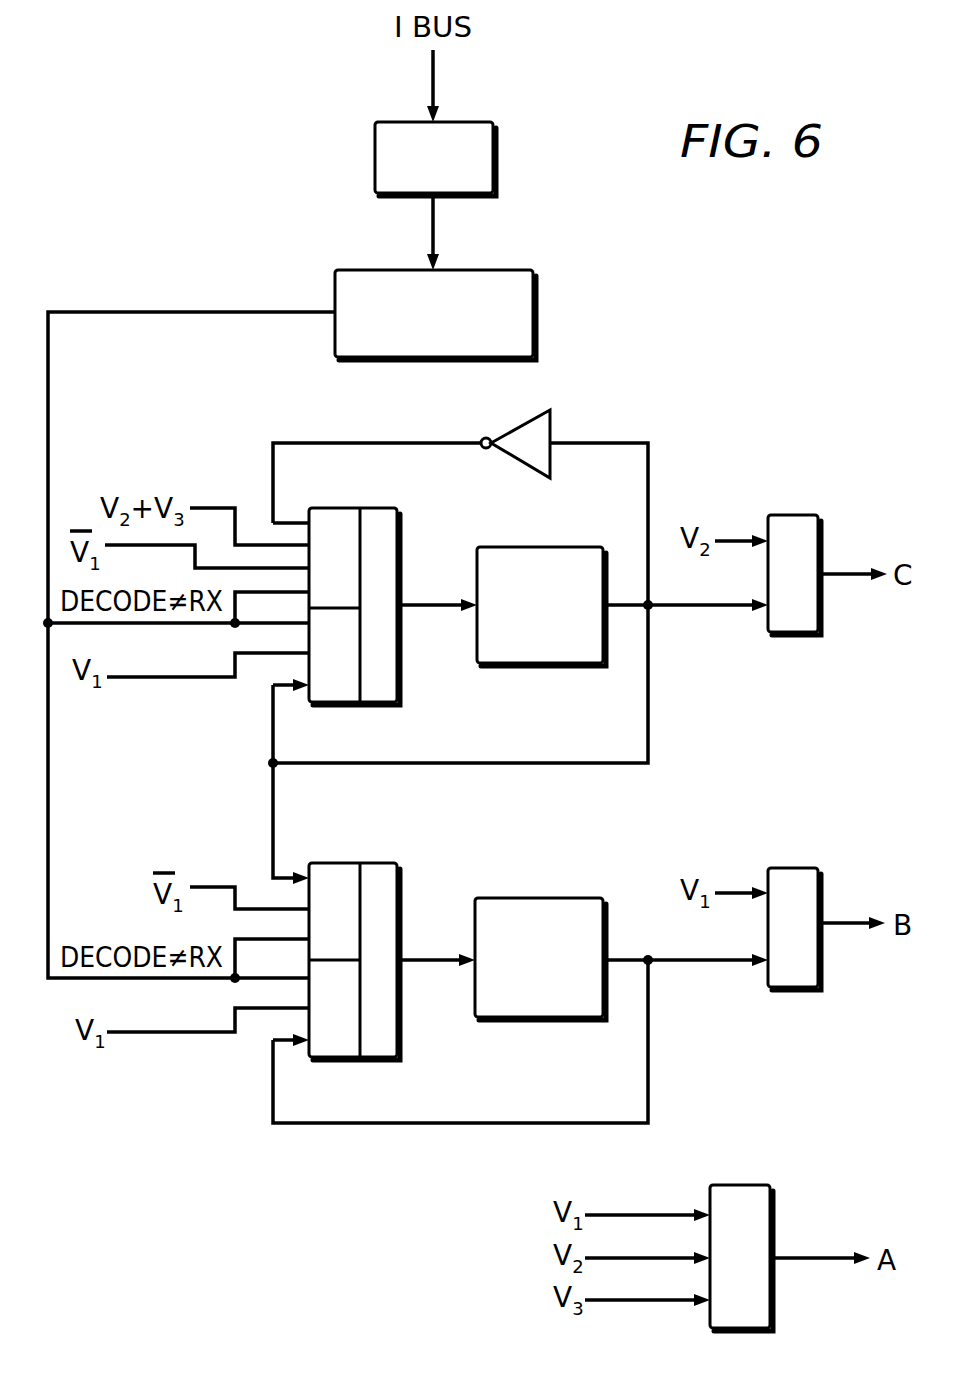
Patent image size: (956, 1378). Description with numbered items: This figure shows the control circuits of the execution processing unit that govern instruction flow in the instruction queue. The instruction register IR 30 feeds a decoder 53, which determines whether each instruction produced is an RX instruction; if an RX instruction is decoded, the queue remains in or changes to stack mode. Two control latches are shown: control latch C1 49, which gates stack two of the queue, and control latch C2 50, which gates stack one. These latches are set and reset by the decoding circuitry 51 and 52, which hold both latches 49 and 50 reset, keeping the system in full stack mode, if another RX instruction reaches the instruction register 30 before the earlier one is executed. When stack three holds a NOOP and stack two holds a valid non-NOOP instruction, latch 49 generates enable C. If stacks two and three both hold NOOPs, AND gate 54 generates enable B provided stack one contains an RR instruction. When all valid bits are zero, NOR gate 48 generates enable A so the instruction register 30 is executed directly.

The instruction register IR 30 is at (493, 176).
The decode logic 53 is at (533, 330).
The decoding circuitry 51 is at (400, 685).
The control latch C1 49 is at (540, 665).
The decoding circuitry 52 is at (793, 635).
The control latch C2 50 is at (528, 898).
The AND gate 54 is at (796, 868).
The NOR gate 48 is at (775, 1212).